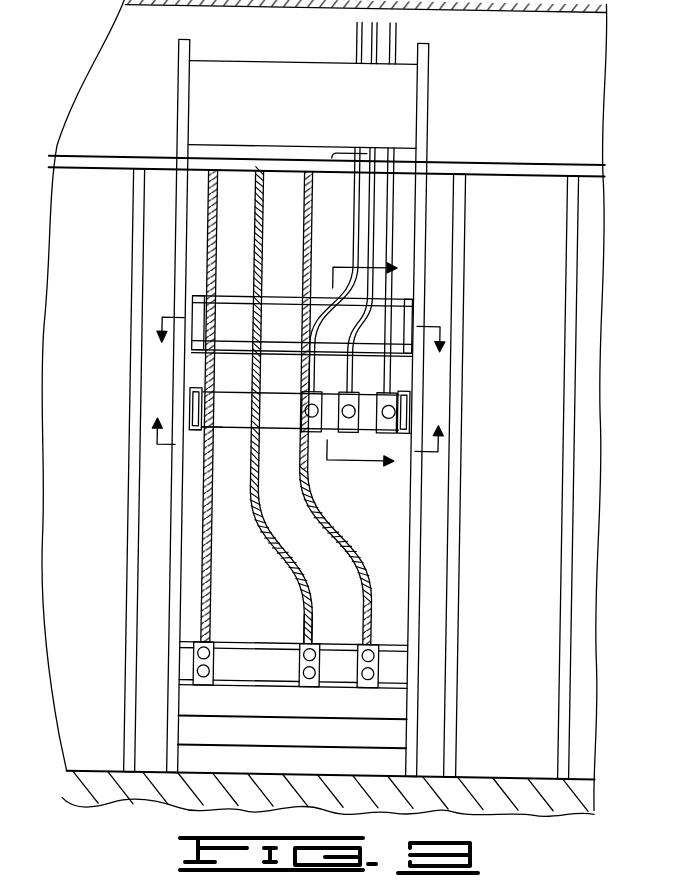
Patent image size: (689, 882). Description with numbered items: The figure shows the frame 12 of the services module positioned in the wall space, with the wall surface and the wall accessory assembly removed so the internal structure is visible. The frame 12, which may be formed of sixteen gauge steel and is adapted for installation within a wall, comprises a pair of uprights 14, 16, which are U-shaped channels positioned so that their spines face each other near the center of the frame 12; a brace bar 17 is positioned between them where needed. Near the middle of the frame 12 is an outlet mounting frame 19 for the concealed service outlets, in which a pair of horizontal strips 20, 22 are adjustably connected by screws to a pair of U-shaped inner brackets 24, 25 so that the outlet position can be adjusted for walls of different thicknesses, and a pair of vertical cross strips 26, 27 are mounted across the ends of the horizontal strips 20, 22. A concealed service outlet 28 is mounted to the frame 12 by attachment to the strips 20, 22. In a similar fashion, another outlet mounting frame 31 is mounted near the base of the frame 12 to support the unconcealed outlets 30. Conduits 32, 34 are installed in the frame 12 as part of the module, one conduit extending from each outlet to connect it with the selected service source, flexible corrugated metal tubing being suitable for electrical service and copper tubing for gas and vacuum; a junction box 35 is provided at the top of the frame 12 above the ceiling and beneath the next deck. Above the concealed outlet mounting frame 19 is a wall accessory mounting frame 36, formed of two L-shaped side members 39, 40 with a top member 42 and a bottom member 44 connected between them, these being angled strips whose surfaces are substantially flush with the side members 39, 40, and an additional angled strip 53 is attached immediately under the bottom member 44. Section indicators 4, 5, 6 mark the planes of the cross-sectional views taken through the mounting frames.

The frame 12 is at (426, 118).
The upright 14 is at (176, 222).
The upright 16 is at (462, 194).
The brace bar 17 is at (352, 735).
The outlet mounting frame 19 is at (196, 440).
The strip 20 is at (299, 445).
The strip 22 is at (216, 431).
The inner bracket 24 is at (188, 406).
The inner bracket 25 is at (415, 456).
The vertical cross strip 26 is at (190, 396).
The vertical cross strip 27 is at (413, 402).
The concealed service outlet 28 is at (347, 430).
The unconcealed outlet 30 is at (300, 648).
The outlet mounting frame 31 is at (397, 646).
The conduit 32 is at (212, 590).
The conduit 34 is at (350, 219).
The junction box 35 is at (383, 102).
The wall accessory mounting frame 36 is at (298, 314).
The side member 39 is at (185, 310).
The side member 40 is at (405, 297).
The top member 42 is at (215, 298).
The bottom member 44 is at (215, 342).
The angled strip 53 is at (262, 355).
The section line 4- 4 is at (298, 424).
The section line 5- 5 is at (300, 347).
The section line 6- 6 is at (371, 367).